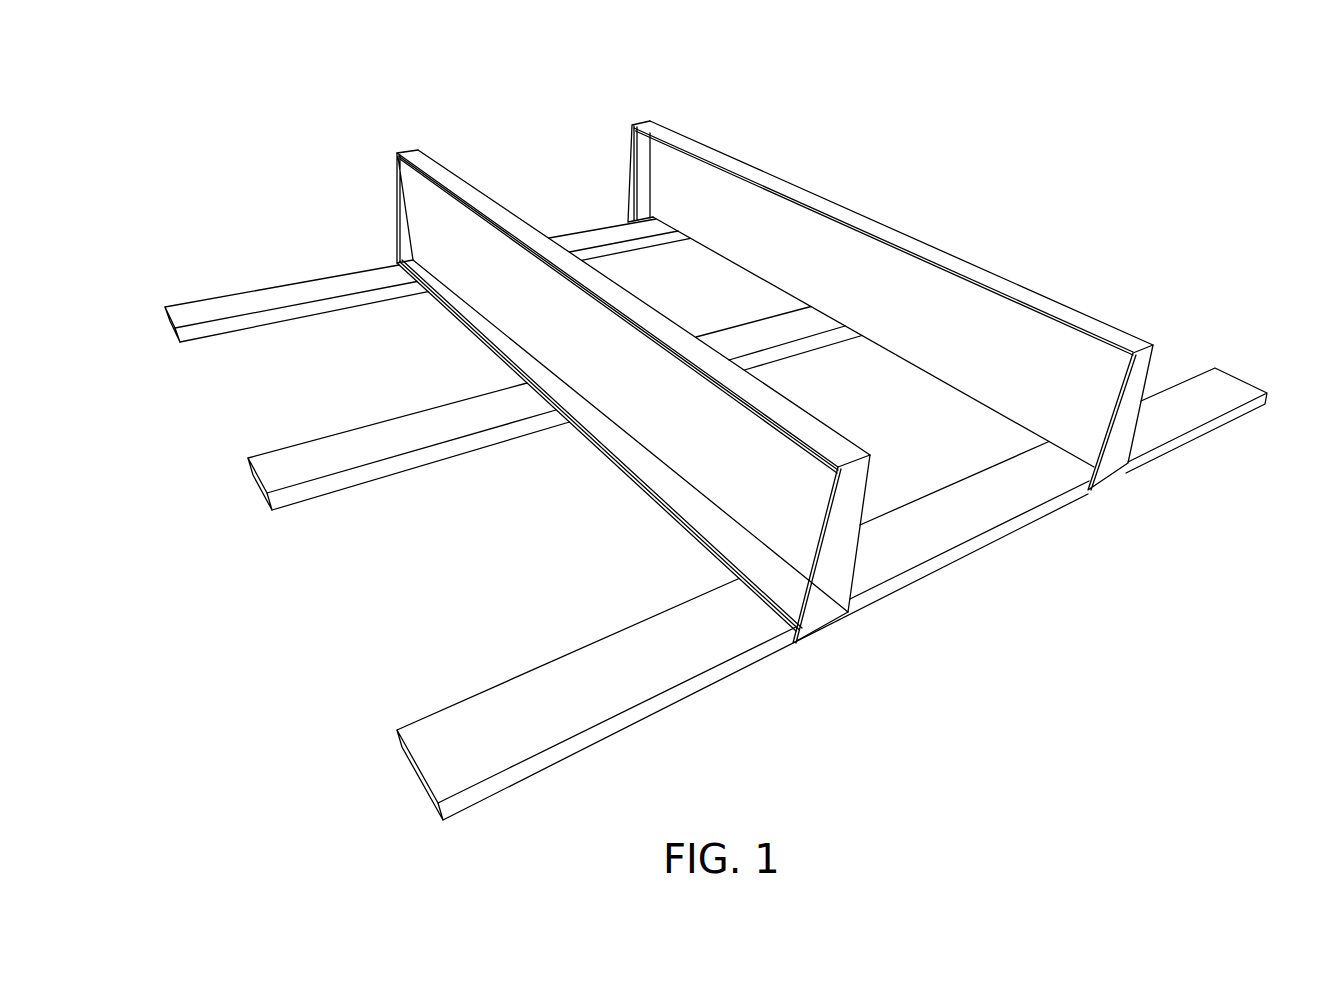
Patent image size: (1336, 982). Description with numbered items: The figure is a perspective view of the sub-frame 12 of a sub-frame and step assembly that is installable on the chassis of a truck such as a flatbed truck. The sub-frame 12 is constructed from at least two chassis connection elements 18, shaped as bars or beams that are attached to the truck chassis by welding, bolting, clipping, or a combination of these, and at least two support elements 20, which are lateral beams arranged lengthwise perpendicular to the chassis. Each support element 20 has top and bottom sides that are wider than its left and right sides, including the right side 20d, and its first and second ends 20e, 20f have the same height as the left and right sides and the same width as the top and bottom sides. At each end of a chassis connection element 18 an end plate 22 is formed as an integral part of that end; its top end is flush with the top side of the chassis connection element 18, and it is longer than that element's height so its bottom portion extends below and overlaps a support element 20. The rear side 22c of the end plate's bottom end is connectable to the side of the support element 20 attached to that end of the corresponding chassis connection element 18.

The sub-frame 12 is at (195, 147).
The chassis connection element 18 is at (905, 237).
The support element 20 is at (555, 238).
The right side 20d is at (302, 318).
The first end 20e is at (163, 313).
The second end 20f is at (1247, 380).
The end plate 22 is at (827, 613).
The rear side 22c is at (399, 233).